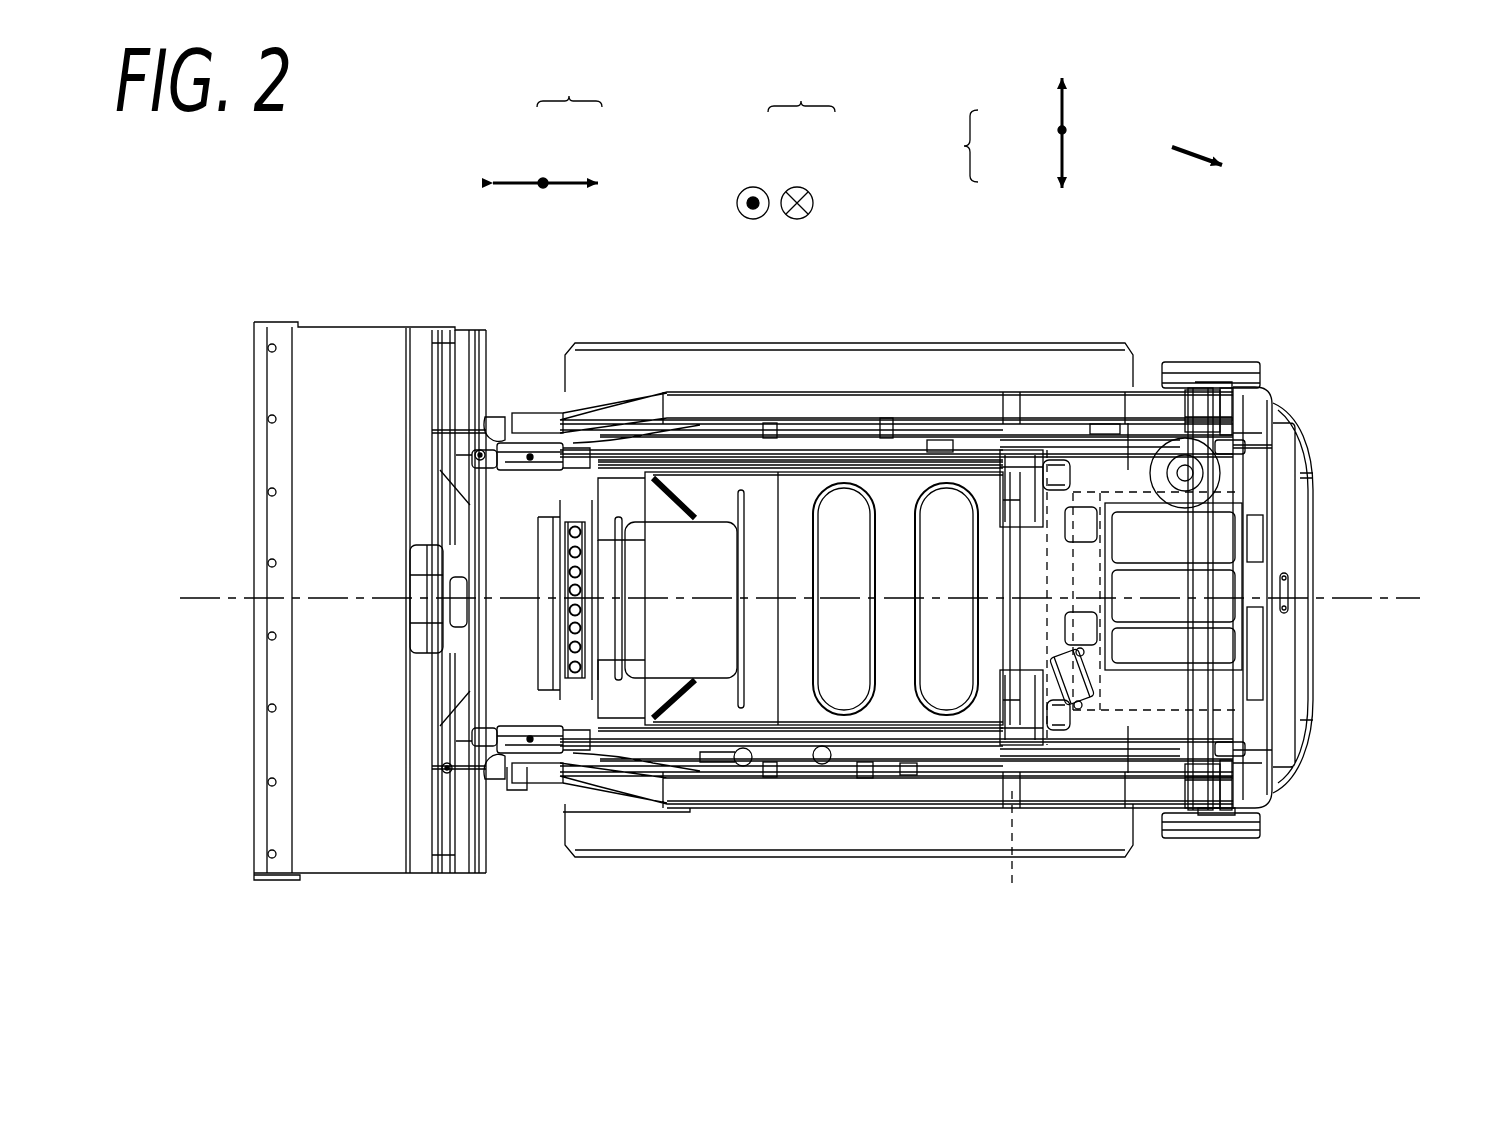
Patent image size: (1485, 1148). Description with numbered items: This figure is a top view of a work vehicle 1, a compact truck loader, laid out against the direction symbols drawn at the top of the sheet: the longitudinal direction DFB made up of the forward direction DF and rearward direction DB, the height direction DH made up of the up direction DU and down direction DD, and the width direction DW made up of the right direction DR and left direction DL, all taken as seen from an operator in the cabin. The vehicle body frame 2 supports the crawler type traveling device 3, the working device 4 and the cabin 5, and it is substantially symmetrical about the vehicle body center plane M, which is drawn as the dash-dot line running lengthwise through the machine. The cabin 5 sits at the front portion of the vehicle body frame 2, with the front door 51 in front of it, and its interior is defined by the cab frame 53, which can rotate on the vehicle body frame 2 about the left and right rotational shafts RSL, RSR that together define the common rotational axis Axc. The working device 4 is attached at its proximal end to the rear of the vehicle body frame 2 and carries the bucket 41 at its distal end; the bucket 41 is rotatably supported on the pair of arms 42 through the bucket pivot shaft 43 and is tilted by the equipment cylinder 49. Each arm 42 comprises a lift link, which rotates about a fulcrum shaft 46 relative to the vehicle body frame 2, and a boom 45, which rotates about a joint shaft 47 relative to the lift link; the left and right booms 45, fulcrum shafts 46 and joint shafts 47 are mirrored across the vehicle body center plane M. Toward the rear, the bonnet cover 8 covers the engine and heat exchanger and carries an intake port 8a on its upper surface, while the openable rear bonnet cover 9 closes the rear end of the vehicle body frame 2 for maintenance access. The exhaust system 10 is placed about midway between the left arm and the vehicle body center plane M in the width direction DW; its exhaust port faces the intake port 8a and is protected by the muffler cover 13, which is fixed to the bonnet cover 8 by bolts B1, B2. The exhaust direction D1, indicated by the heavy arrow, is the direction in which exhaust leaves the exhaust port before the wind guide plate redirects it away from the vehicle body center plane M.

The work vehicle 1 is at (335, 205).
The vehicle body frame 2 is at (1275, 392).
The traveling device 3 is at (905, 343).
The working device 4 is at (405, 245).
The cabin 5 is at (797, 502).
The bonnet cover 8 is at (1128, 467).
The intake port 8a is at (1143, 508).
The rear bonnet cover 9 is at (1302, 513).
The exhaust system 10 is at (1117, 792).
The muffler cover 13 is at (1117, 776).
The bucket 41 is at (325, 318).
The arms 42 is at (850, 400).
The bucket pivot shaft 43 is at (505, 706).
The boom 45 is at (1203, 408).
The fulcrum shaft 46 is at (1200, 392).
The joint shaft 47 is at (1232, 447).
The equipment cylinder 49 is at (476, 452).
The front door 51 is at (590, 658).
The cab frame 53 is at (837, 463).
The vehicle body center plane M is at (240, 598).
The right rotational shaft RSR is at (1055, 470).
The left rotational shaft RSL is at (1060, 740).
The bolt B1 is at (1082, 658).
The bolt B2 is at (1129, 799).
The common rotational axis Axc is at (1015, 850).
The exhaust direction D1 is at (1203, 150).
The longitudinal direction DFB is at (551, 126).
The forward direction DF is at (524, 180).
The rearward direction DB is at (566, 178).
The height direction DH is at (789, 142).
The up direction DU is at (753, 186).
The down direction DD is at (797, 186).
The width direction DW is at (998, 133).
The right direction DR is at (1060, 107).
The left direction DL is at (1060, 157).